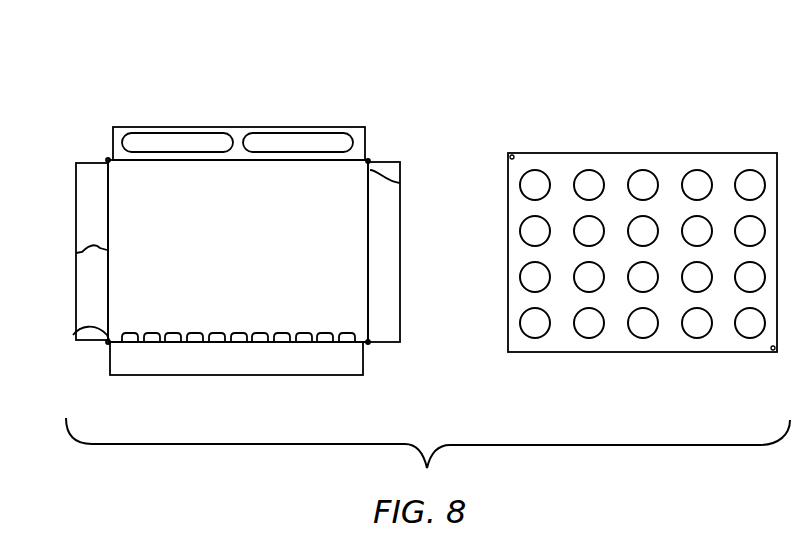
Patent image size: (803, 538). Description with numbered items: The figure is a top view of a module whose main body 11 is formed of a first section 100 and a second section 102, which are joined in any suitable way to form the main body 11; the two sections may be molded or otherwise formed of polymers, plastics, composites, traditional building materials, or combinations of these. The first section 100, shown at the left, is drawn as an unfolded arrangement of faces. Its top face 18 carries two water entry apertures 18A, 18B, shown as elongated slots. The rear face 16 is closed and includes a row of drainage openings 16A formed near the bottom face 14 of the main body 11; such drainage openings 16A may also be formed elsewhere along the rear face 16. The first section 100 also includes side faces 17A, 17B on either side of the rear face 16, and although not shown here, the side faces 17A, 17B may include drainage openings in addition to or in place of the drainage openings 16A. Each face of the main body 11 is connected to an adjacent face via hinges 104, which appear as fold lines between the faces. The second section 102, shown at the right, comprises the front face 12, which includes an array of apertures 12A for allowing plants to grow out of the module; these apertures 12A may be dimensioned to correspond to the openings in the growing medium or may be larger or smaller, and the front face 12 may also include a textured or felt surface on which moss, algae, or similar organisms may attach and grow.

The main body 11 is at (432, 183).
The first section 100 is at (126, 100).
The front face 12 is at (642, 222).
The apertures 12A is at (645, 172).
The second section 102 is at (733, 125).
The top face 18 is at (239, 113).
The water entry aperture 18A is at (316, 127).
The water entry aperture 18B is at (190, 127).
The side face 17A is at (76, 200).
The side face 17B is at (400, 252).
The bottom face 14 is at (333, 376).
The hinges 104 is at (368, 160).
The rear face 16 is at (73, 335).
The drainage openings 16A is at (213, 342).